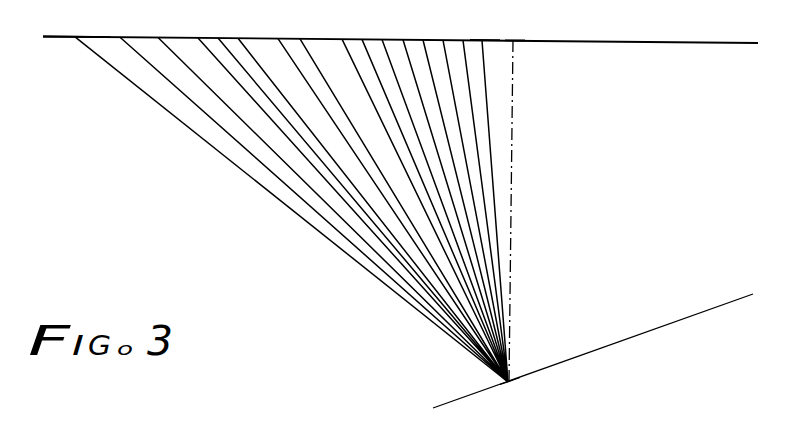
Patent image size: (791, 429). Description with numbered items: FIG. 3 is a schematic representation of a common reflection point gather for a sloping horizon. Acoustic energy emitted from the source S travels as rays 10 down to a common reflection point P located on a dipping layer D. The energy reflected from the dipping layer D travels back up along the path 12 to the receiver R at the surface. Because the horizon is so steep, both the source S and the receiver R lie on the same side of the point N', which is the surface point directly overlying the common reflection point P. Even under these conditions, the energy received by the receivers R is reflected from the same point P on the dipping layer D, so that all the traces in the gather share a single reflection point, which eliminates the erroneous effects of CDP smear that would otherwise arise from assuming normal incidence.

The primary path 10 is at (283, 205).
The reflected energy path 12 is at (491, 145).
The source S is at (101, 19).
The receiver R is at (492, 42).
The point N' is at (526, 30).
The dipping layer D is at (436, 405).
The common reflection point P is at (508, 382).